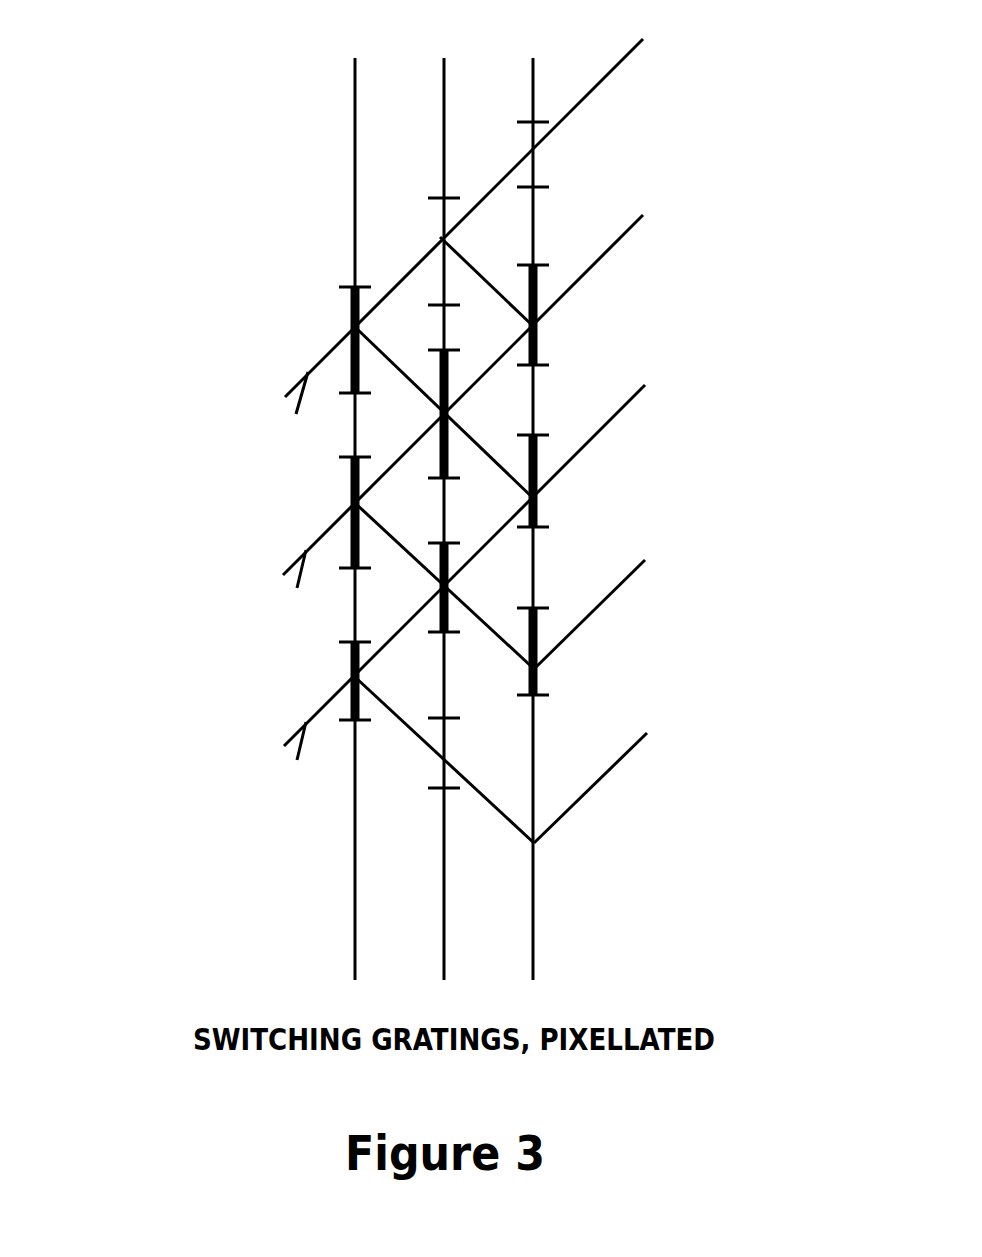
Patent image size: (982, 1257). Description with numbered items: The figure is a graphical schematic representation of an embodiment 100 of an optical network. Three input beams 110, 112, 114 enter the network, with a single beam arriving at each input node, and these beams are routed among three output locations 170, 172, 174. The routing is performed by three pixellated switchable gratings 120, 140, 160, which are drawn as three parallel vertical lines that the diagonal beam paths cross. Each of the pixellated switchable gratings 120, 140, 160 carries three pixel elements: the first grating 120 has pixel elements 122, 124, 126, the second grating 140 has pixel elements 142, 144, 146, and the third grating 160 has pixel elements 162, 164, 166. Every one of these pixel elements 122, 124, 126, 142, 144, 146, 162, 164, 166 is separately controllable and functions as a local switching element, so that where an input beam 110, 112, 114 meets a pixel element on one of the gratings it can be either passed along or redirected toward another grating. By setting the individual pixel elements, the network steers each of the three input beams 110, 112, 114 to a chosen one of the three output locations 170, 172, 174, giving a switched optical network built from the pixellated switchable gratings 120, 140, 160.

The optical network embodiment 100 is at (393, 495).
The input beam 110 is at (456, 246).
The input beam 112 is at (402, 477).
The input beam 114 is at (403, 647).
The pixellated switchable grating 120 is at (356, 917).
The pixel element 122 is at (352, 315).
The pixel element 124 is at (348, 490).
The pixel element 126 is at (348, 660).
The pixellated switchable grating 140 is at (445, 902).
The pixel element 142 is at (441, 239).
The pixel element 144 is at (436, 447).
The pixel element 146 is at (453, 560).
The pixellated switchable grating 160 is at (534, 897).
The pixel element 162 is at (538, 292).
The pixel element 164 is at (543, 460).
The pixel element 166 is at (545, 637).
The output location 170 is at (615, 247).
The output location 172 is at (615, 417).
The output location 174 is at (615, 590).